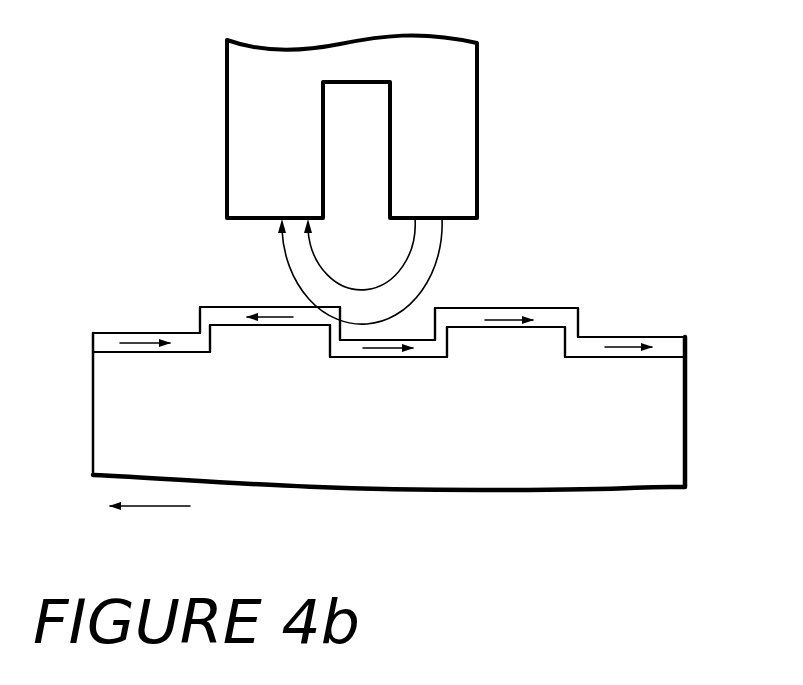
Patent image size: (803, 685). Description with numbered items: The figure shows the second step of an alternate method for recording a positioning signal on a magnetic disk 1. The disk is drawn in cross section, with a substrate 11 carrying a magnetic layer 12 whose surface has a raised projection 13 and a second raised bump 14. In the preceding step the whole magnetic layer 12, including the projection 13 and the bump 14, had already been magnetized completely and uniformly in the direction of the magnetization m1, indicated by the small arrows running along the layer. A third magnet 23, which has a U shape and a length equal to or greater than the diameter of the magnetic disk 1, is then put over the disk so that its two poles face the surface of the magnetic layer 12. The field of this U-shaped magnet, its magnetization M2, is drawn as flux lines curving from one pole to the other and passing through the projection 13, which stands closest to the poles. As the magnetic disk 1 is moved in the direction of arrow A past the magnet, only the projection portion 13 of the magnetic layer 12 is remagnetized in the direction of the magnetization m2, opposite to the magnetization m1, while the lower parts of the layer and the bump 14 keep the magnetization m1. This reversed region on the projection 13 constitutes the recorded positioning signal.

The magnetic disk 1 is at (627, 300).
The substrate 11 is at (660, 397).
The magnetic layer 12 is at (672, 345).
The projection 13 is at (215, 306).
The bump 14 is at (412, 337).
The third magnet 23 is at (462, 90).
The magnetization of the U-shaped magnet M2 is at (437, 240).
The magnetization m1 is at (380, 358).
The magnetization m2 is at (277, 307).
The arrow A is at (155, 508).